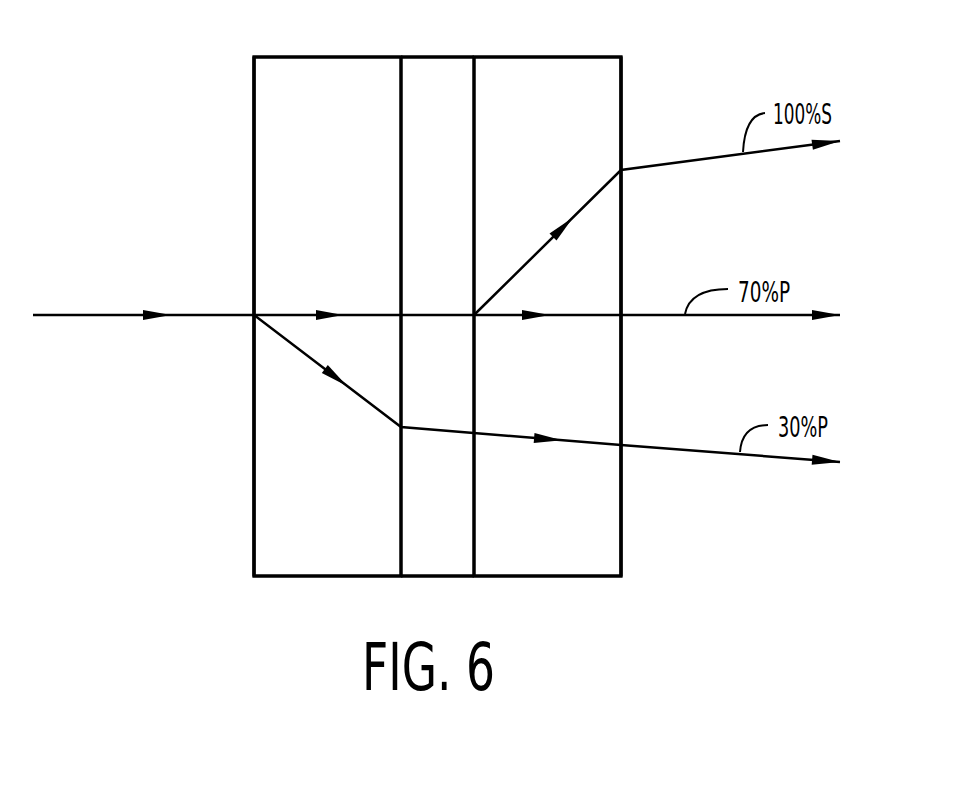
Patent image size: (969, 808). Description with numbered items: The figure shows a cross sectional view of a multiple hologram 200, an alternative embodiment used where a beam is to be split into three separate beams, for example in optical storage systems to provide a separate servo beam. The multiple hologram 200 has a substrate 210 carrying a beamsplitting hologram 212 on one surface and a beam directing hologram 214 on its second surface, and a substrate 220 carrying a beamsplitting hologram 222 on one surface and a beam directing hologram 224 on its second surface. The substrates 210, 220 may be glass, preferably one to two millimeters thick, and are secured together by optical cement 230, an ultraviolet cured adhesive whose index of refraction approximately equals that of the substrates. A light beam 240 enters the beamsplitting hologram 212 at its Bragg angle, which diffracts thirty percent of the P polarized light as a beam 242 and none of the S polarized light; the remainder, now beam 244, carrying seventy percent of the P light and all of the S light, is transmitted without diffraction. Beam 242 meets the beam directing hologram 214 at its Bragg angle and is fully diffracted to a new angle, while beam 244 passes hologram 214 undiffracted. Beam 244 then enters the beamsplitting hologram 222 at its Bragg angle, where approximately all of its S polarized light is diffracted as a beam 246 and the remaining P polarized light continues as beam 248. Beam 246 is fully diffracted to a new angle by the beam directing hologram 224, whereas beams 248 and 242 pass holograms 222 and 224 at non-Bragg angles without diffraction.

The multiple hologram 200 is at (166, 587).
The substrate 210 is at (345, 130).
The beamsplitting hologram 212 is at (253, 200).
The beam directing hologram 214 is at (400, 195).
The substrate 220 is at (560, 121).
The beamsplitting hologram 222 is at (474, 178).
The beam directing hologram 224 is at (622, 115).
The optical cement 230 is at (440, 75).
The light beam 240 is at (79, 315).
The beam 242 is at (365, 402).
The beam 244 is at (290, 314).
The beam 246 is at (542, 245).
The beam 248 is at (602, 320).